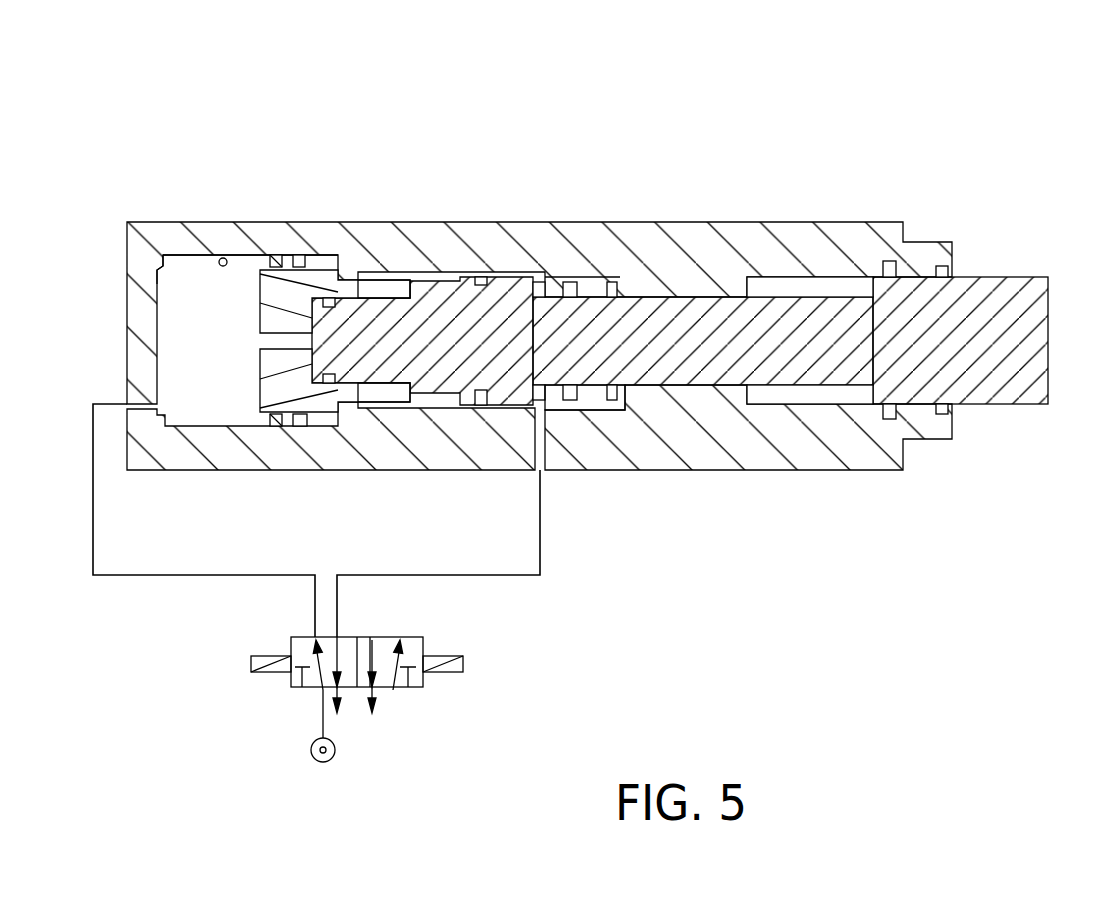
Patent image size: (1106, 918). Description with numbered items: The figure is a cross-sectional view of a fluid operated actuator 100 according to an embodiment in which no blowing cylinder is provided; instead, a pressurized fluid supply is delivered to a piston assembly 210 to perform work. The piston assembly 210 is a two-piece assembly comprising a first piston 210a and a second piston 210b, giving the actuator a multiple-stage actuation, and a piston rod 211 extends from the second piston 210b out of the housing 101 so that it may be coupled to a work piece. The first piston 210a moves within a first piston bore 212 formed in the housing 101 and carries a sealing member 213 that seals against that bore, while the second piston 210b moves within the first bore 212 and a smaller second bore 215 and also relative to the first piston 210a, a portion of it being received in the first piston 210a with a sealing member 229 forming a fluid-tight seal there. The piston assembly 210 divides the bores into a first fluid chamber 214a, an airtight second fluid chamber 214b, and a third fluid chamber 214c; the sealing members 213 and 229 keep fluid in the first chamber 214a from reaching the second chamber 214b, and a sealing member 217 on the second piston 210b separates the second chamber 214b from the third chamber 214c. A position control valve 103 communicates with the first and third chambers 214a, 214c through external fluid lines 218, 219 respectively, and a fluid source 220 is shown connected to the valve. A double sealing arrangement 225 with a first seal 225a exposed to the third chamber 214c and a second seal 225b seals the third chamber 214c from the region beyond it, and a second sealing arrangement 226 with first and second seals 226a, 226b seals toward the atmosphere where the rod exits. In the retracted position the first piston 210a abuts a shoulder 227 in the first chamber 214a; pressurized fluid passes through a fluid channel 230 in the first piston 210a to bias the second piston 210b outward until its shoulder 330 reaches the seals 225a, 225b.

The fluid operated actuator 100 is at (570, 287).
The housing 101 is at (713, 230).
The position control valve 103 is at (442, 720).
The piston assembly 210 is at (619, 343).
The first piston 210a is at (313, 262).
The second piston 210b is at (498, 282).
The piston rod 211 is at (695, 367).
The first piston bore 212 is at (224, 258).
The sealing member 213 is at (297, 262).
The first fluid chamber 214a is at (187, 275).
The second fluid chamber 214b is at (436, 281).
The third fluid chamber 214c is at (545, 285).
The second bore 215 is at (445, 403).
The sealing member 217 is at (478, 405).
The fluid line 218 is at (315, 610).
The fluid line 219 is at (510, 575).
The fluid source 220 is at (335, 757).
The sealing arrangement 225 is at (606, 463).
The first seal 225a is at (566, 397).
The second seal 225b is at (615, 402).
The second sealing arrangement 226 is at (906, 283).
The first seal 226a is at (890, 267).
The second seal 226b is at (953, 267).
The shoulder 227 is at (153, 268).
The sealing member 229 is at (327, 384).
The fluid channel 230 is at (270, 343).
The shoulder 330 is at (538, 282).